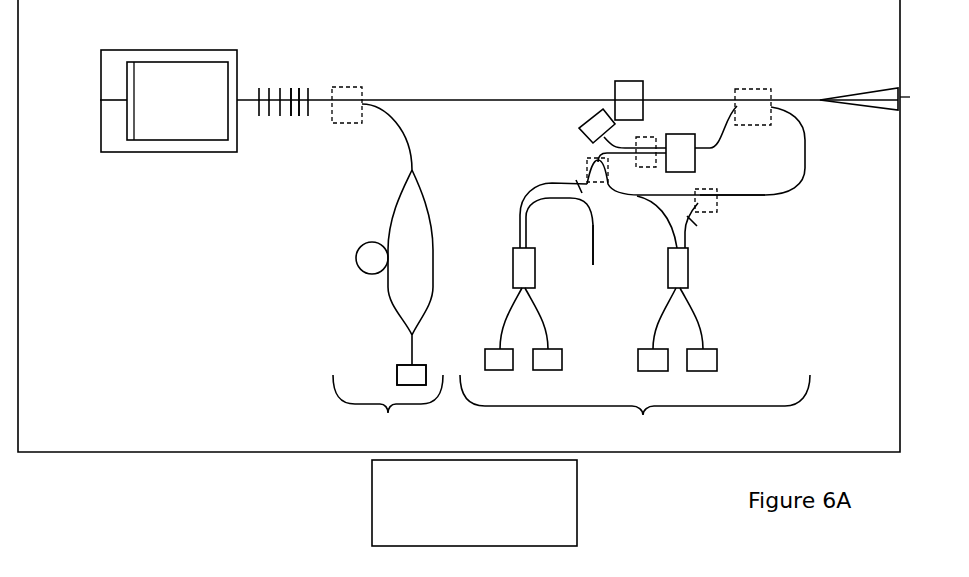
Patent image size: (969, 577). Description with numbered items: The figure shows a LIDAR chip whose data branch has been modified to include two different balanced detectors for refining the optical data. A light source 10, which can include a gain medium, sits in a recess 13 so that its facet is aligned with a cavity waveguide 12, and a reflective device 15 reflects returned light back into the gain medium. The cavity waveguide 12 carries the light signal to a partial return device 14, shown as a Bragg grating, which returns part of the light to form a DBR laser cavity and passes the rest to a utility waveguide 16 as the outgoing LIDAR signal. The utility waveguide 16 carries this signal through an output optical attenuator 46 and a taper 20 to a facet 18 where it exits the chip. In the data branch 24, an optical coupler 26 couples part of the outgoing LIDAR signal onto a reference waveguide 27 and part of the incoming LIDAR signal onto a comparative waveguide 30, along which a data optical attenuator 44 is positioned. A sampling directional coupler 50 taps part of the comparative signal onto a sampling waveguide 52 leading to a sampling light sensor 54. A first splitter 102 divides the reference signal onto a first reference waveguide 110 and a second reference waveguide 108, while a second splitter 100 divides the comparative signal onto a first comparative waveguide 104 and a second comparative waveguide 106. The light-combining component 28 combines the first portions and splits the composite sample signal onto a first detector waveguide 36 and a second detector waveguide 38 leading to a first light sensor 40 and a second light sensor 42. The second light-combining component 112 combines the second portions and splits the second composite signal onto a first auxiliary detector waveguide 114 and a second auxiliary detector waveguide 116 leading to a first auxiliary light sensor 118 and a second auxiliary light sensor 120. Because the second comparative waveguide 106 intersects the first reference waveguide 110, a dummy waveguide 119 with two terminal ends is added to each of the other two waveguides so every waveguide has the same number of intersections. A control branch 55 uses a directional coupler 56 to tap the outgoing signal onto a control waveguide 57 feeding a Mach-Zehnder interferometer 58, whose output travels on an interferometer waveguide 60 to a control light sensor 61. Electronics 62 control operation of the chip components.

The light source 10 is at (165, 141).
The cavity waveguide 12 is at (244, 99).
The recess 13 is at (171, 50).
The partial return device 14 is at (298, 126).
The reflective device 15 is at (100, 100).
The utility waveguide 16 is at (415, 99).
The facet 18 is at (918, 96).
The taper 20 is at (875, 90).
The data branch 24 is at (635, 410).
The optical coupler 26 is at (767, 88).
The reference waveguide 27 is at (777, 197).
The light-combining component 28 is at (535, 262).
The comparative waveguide 30 is at (722, 130).
The first detector waveguide 36 is at (506, 320).
The second detector waveguide 38 is at (531, 307).
The first light sensor 40 is at (486, 349).
The second light sensor 42 is at (548, 370).
The data optical attenuator 44 is at (677, 134).
The output optical attenuator 46 is at (613, 86).
The sampling directional coupler 50 is at (644, 168).
The sampling waveguide 52 is at (611, 146).
The sampling light sensor 54 is at (588, 110).
The control branch 55 is at (388, 410).
The directional coupler 56 is at (350, 86).
The control waveguide 57 is at (397, 128).
The interferometer 58 is at (346, 236).
The interferometer waveguide 60 is at (410, 357).
The control light sensor 61 is at (397, 377).
The electronics 62 is at (372, 487).
The second splitter 100 is at (590, 160).
The first splitter 102 is at (705, 189).
The first comparative waveguide 104 is at (530, 207).
The second comparative waveguide 106 is at (660, 217).
The second reference waveguide 108 is at (687, 231).
The first reference waveguide 110 is at (600, 258).
The second light-combining component 112 is at (688, 270).
The first auxiliary detector waveguide 114 is at (660, 320).
The second auxiliary detector waveguide 116 is at (700, 319).
The first auxiliary light sensor 118 is at (640, 349).
The dummy waveguide 119 is at (580, 187).
The second auxiliary light sensor 120 is at (716, 350).